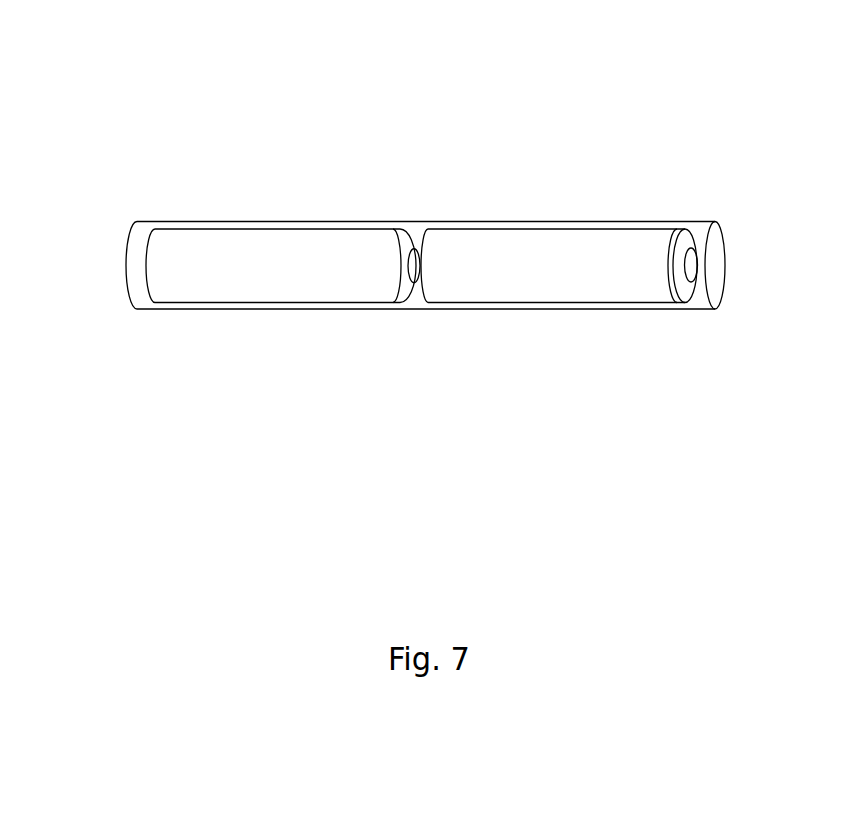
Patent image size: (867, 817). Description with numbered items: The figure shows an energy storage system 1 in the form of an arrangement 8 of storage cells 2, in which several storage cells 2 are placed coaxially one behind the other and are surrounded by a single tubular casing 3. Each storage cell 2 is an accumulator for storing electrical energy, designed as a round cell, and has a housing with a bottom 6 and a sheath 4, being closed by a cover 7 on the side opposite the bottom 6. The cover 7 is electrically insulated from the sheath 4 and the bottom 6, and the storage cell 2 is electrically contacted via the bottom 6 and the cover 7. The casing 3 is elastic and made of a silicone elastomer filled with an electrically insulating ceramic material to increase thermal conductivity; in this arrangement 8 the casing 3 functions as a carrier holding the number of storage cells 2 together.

The energy storage system 1 is at (424, 212).
The storage cell 2 is at (272, 282).
The casing 3 is at (660, 310).
The sheath 4 is at (157, 303).
The bottom 6 is at (147, 272).
The cover 7 is at (412, 270).
The arrangement 8 is at (360, 157).